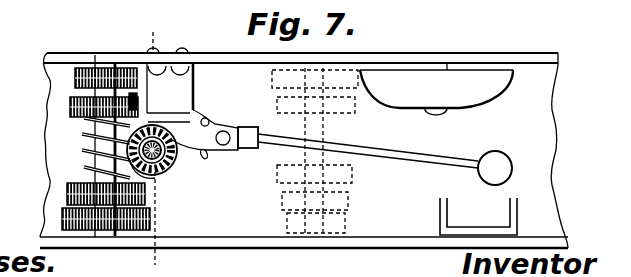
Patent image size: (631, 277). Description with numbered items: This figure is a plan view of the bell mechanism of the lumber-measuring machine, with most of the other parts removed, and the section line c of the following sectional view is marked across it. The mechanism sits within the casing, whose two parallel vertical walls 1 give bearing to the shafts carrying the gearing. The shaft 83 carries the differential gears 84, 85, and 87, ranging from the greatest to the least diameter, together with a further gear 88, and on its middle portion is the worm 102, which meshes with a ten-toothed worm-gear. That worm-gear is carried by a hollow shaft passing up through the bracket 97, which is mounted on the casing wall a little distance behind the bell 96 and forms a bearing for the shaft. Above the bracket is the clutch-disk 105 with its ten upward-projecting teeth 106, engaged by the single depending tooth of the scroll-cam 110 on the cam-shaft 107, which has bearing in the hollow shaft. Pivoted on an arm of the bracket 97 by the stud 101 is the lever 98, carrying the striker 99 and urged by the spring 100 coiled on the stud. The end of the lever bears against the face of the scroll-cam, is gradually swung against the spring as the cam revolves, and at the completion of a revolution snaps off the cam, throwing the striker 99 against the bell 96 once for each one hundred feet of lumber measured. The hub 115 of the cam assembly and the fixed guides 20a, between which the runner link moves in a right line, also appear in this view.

The parallel vertical walls 1 is at (380, 234).
The section line c c is at (153, 146).
The shaft 83 is at (116, 237).
The differential gear 84 is at (62, 214).
The differential gear 85 is at (67, 191).
The differential gear 87 is at (75, 79).
The gear 88 is at (70, 107).
The bell 96 is at (436, 89).
The bracket 97 is at (161, 80).
The lever 98 is at (252, 131).
The striker 99 is at (385, 159).
The spring 100 is at (202, 158).
The stud or pivotal bearing 101 is at (225, 131).
The worm 102 is at (85, 152).
The clutch-disk 105 is at (162, 157).
The teeth 106 is at (157, 180).
The cam-shaft 107 is at (190, 115).
The scroll-cam 110 is at (180, 160).
The hub 115 is at (146, 148).
The fixed guides 20a is at (497, 214).